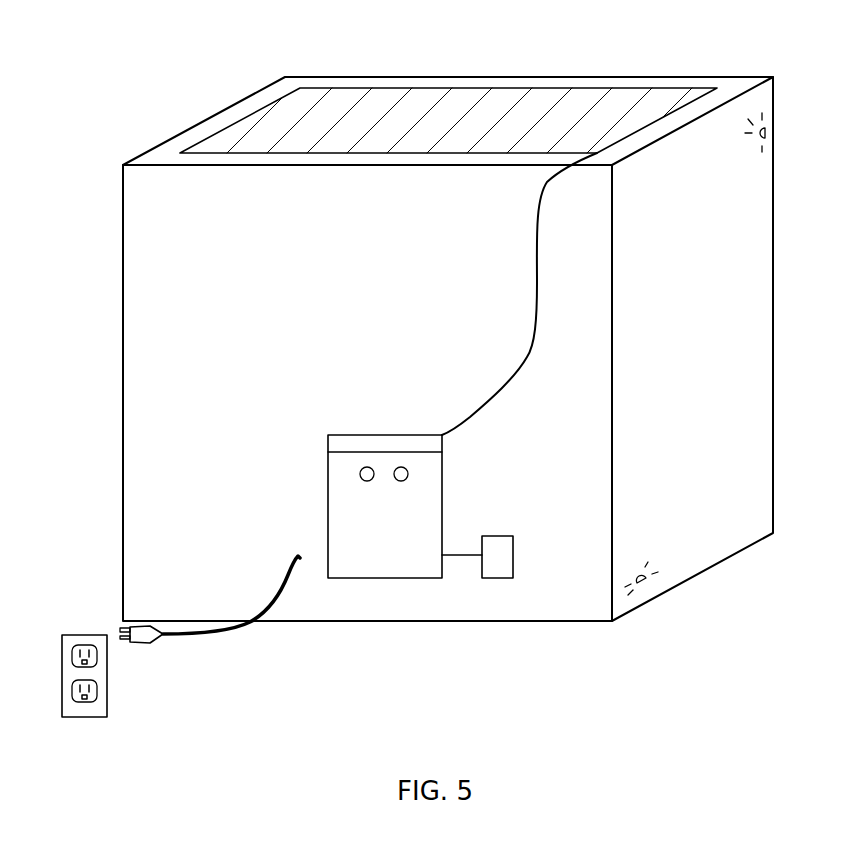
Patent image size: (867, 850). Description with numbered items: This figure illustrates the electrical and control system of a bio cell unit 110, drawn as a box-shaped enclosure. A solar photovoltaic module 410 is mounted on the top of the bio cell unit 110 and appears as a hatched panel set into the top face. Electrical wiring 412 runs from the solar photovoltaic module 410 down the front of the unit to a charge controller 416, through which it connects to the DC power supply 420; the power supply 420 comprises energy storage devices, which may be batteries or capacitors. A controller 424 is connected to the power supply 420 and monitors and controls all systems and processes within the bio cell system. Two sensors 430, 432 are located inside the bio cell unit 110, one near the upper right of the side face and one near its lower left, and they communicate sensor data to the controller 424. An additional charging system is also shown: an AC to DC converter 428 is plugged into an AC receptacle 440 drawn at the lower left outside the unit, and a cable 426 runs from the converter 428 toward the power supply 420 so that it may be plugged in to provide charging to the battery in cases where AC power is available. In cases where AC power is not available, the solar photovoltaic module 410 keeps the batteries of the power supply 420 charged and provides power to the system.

The bio cell unit 110 is at (458, 77).
The solar photovoltaic module 410 is at (348, 90).
The electrical wiring 412 is at (537, 287).
The charge controller 416 is at (368, 433).
The DC power supply 420 is at (443, 478).
The controller 424 is at (513, 555).
The cable 426 is at (235, 633).
The AC to DC converter 428 is at (153, 647).
The sensor 430 is at (752, 140).
The sensor 432 is at (639, 571).
The AC receptacle 440 is at (85, 717).